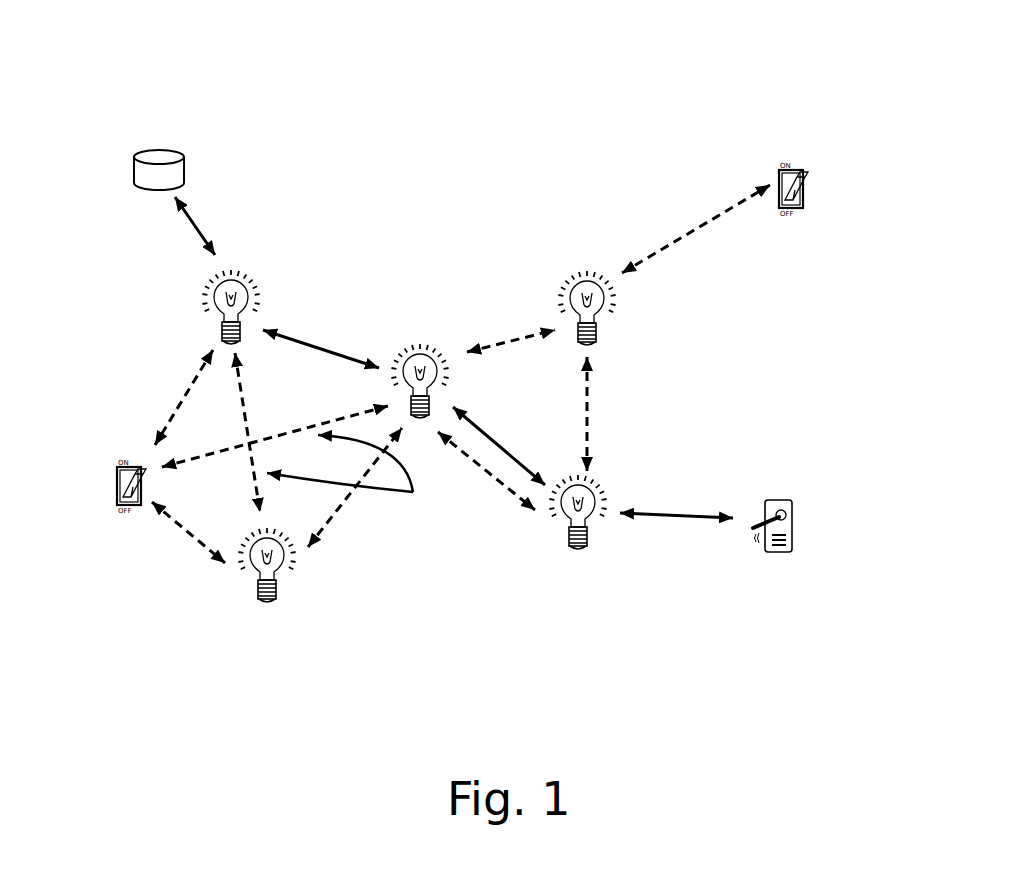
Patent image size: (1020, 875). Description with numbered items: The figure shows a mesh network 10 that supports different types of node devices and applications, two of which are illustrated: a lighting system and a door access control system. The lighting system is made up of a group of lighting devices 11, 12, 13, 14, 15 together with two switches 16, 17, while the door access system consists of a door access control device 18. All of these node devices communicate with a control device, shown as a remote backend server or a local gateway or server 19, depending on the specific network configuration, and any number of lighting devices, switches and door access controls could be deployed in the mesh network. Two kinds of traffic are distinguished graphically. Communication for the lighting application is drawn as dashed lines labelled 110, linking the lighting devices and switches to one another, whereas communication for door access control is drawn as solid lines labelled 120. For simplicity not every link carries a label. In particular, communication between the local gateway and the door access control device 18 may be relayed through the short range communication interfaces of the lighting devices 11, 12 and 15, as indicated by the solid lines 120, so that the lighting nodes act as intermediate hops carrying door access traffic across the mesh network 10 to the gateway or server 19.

The mesh network 10 is at (557, 83).
The lighting device 11 is at (263, 275).
The lighting device 12 is at (420, 342).
The lighting device 13 is at (622, 303).
The lighting device 14 is at (280, 595).
The lighting device 15 is at (578, 555).
The switch 16 is at (122, 517).
The switch 17 is at (790, 220).
The door access control device 18 is at (768, 553).
The local gateway or server 19 is at (192, 166).
The communication for the lighting application 110 is at (472, 478).
The communication for door access control 120 is at (523, 453).